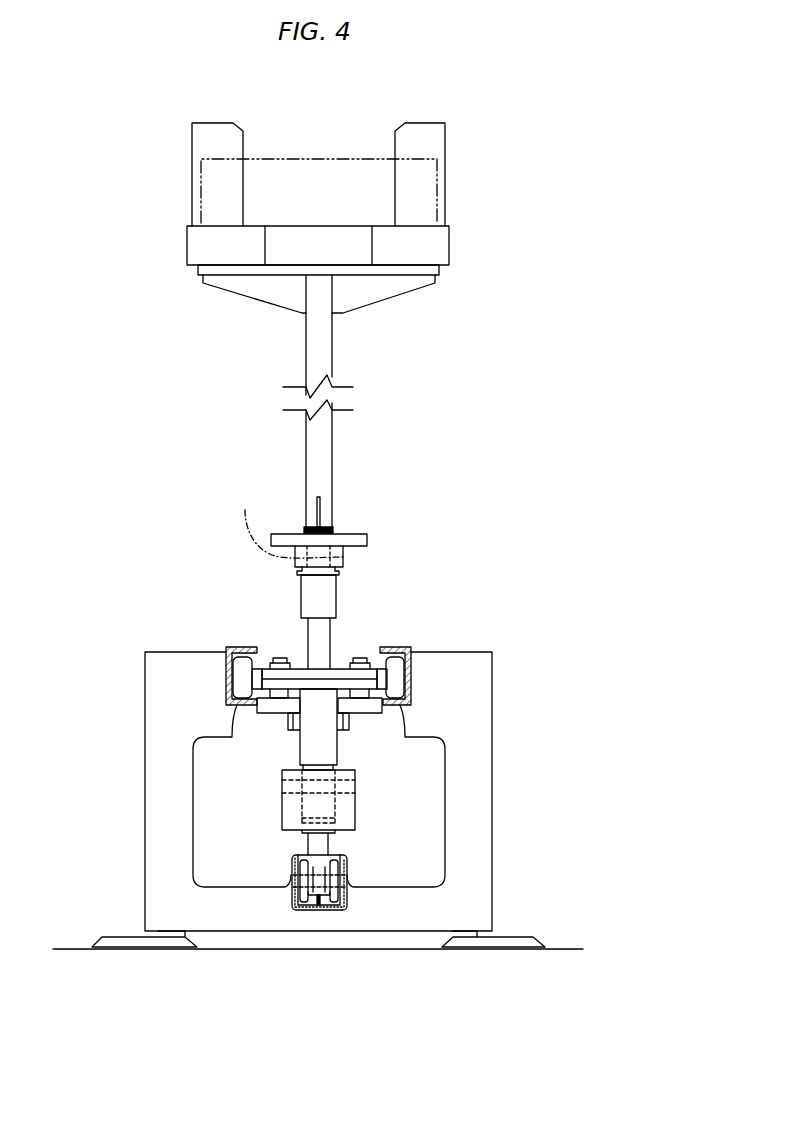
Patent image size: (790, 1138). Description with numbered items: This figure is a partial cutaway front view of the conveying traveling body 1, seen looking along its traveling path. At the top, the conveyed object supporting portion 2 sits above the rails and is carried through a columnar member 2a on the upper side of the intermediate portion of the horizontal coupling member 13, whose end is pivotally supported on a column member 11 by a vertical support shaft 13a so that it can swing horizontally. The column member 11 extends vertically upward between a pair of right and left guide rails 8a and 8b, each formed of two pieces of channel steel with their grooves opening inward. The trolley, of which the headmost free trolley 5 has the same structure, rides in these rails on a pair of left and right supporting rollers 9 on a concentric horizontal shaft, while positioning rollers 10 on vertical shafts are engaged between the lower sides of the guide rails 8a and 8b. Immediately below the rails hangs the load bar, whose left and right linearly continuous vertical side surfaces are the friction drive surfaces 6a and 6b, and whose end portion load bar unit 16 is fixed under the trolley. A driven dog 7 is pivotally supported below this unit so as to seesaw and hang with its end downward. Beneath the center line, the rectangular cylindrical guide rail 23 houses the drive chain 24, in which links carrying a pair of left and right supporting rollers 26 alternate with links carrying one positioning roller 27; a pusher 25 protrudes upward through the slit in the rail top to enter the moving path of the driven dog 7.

The conveying traveling body 1 is at (343, 523).
The conveyed object supporting portion 2 is at (452, 245).
The columnar member 2a is at (311, 353).
The headmost free trolley 5 is at (297, 663).
The friction drive surface 6a is at (300, 747).
The friction drive surface 6b is at (352, 744).
The driven dog 7 is at (280, 807).
The guide rail 8a is at (230, 668).
The guide rail 8b is at (410, 667).
The supporting rollers 9 is at (240, 677).
The positioning rollers 10 is at (357, 703).
The column member 11 is at (317, 647).
The horizontal coupling member 13 is at (337, 555).
The vertical support shaft 13a is at (280, 521).
The end portion load bar unit 16 is at (327, 750).
The rectangular cylindrical guide rail 23 is at (312, 903).
The drive chain 24 is at (318, 905).
The pusher 25 is at (320, 837).
The supporting rollers 26 is at (302, 895).
The positioning roller 27 is at (345, 880).